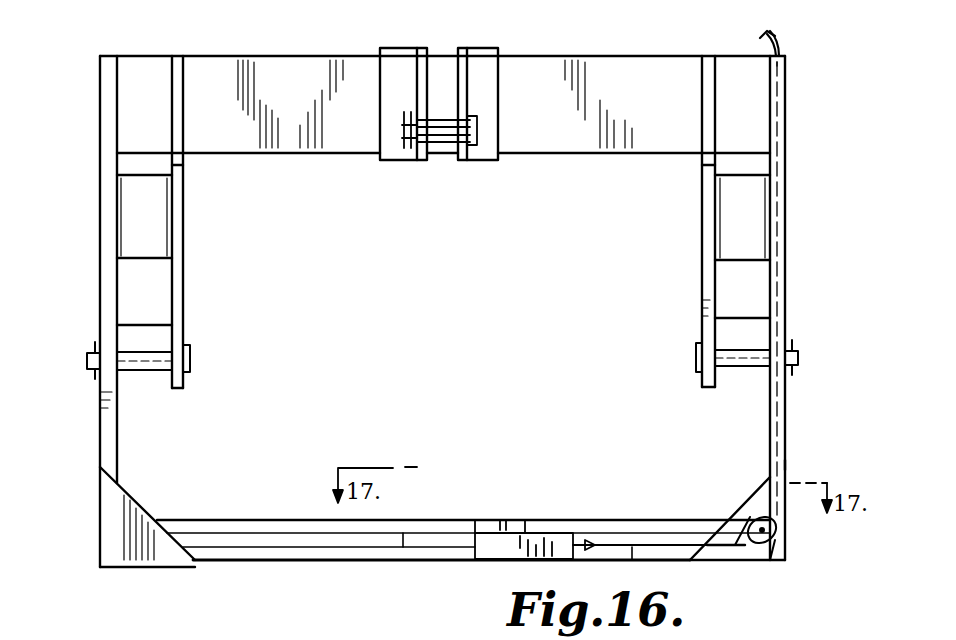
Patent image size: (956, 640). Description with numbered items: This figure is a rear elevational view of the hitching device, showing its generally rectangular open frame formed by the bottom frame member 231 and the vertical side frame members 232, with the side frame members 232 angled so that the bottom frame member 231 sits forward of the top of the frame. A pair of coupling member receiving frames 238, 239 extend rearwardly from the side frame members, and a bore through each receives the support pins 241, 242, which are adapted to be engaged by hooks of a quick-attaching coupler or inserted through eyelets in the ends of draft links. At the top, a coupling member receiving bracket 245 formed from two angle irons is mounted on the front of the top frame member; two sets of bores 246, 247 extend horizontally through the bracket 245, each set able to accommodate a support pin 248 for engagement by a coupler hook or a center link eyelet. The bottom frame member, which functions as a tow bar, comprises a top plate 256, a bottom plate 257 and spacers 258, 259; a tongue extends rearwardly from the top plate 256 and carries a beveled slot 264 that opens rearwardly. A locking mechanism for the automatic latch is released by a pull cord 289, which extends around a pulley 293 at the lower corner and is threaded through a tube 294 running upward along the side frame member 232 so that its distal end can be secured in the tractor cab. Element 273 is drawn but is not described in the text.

The bottom frame member 231 is at (175, 520).
The side frame member 232 is at (786, 466).
The coupling member receiving frame 238 is at (703, 286).
The coupling member receiving frame 239 is at (186, 273).
The support pin 241 is at (798, 360).
The support pin 242 is at (87, 356).
The coupling member receiving bracket 245 is at (478, 48).
The set of bores 246 is at (414, 77).
The set of bores 247 is at (408, 148).
The support pin 248 is at (448, 118).
The top plate 256 is at (237, 520).
The bottom plate 257 is at (237, 560).
The spacer 258 is at (648, 536).
The spacer 259 is at (312, 540).
The beveled slot 264 is at (151, 632).
The member 273 is at (279, 633).
The pull cord 289 is at (780, 44).
The pulley 293 is at (750, 516).
The tube 294 is at (771, 424).